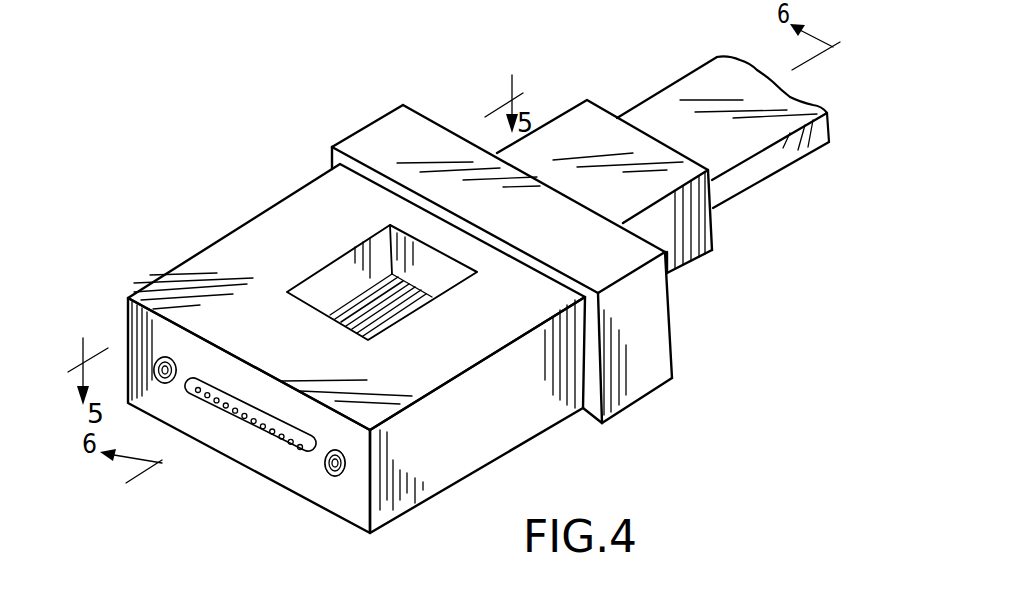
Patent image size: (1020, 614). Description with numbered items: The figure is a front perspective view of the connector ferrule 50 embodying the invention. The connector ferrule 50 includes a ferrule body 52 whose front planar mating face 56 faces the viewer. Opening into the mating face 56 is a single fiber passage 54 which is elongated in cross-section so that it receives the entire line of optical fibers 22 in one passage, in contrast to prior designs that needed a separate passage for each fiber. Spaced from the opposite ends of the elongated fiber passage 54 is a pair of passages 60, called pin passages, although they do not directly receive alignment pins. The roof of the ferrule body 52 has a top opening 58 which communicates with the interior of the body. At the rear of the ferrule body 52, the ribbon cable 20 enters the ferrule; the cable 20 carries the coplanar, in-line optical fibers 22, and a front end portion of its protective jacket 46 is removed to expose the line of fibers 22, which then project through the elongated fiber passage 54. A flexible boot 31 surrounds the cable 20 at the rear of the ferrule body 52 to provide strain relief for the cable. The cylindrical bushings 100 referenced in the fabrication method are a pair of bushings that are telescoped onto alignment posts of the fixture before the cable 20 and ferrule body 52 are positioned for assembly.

The ribbon cable 20 is at (814, 159).
The optical fibers 22 is at (392, 307).
The flexible boot 31 is at (602, 143).
The protective jacket 46 is at (741, 152).
The connector ferrule 50 is at (296, 160).
The ferrule body 52 is at (497, 432).
The fiber passage 54 is at (237, 408).
The front planar mating face 56 is at (310, 483).
The top opening 58 is at (408, 250).
The pin passages 60 is at (155, 360).
The cylindrical bushings 100 is at (167, 385).